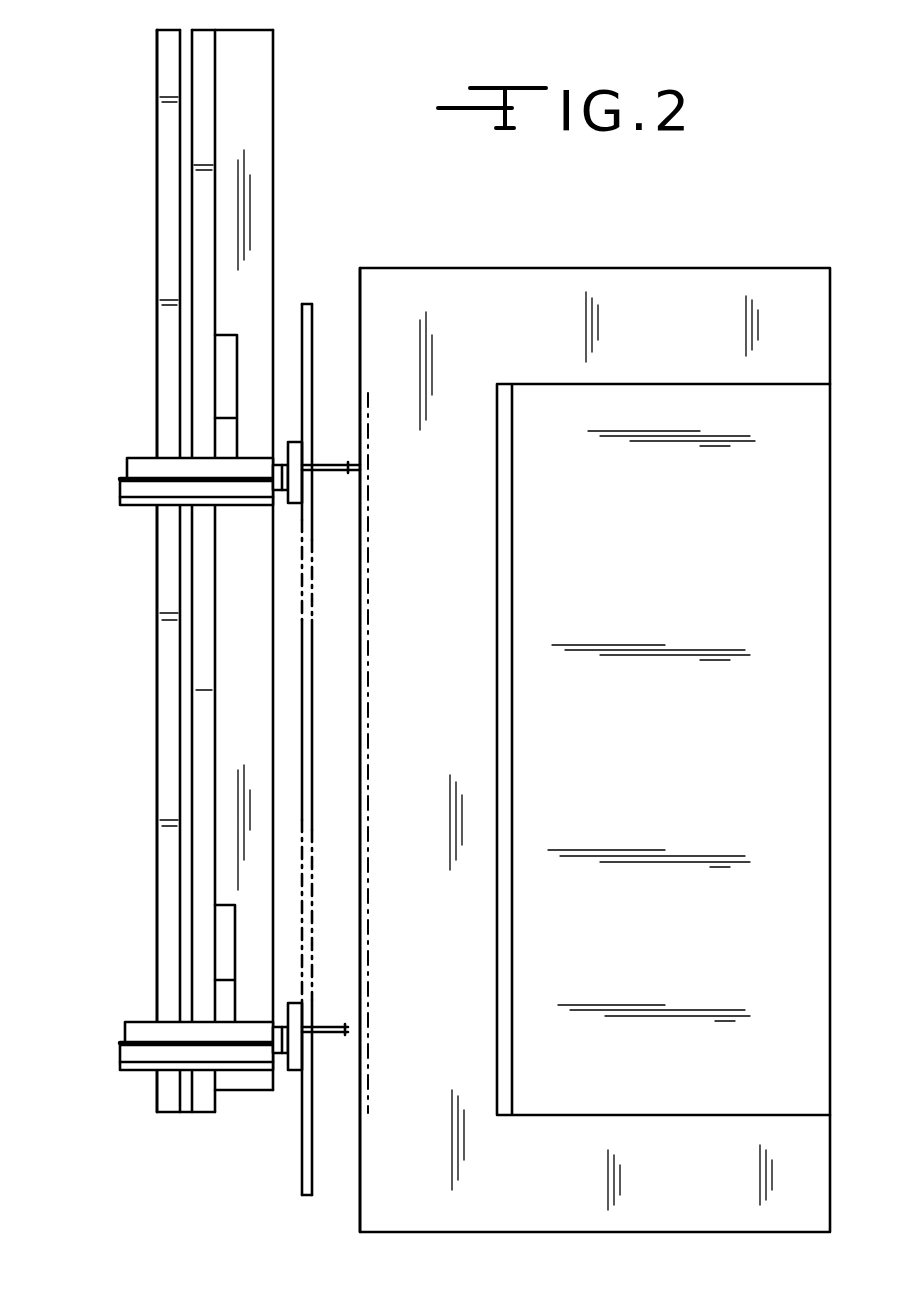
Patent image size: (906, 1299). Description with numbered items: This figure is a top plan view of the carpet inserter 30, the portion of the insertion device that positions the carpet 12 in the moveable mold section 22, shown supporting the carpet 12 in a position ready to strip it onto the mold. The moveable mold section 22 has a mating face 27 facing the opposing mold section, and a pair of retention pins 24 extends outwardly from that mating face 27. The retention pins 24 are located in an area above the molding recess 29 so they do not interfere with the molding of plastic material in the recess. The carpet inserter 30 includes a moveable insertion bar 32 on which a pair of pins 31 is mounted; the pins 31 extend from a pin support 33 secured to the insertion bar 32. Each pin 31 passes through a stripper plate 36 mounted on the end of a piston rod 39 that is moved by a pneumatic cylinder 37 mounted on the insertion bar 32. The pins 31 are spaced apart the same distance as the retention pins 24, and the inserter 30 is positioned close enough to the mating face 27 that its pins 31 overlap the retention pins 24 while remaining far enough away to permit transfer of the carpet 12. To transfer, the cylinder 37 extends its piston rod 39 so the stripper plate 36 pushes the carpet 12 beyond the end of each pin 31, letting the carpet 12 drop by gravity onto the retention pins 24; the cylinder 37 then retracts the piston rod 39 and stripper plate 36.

The carpet 12 is at (300, 1162).
The moveable mold section 22 is at (685, 288).
The retention pins 24 is at (348, 478).
The mating face 27 is at (360, 298).
The molding recess 29 is at (372, 752).
The carpet inserter 30 is at (136, 90).
The pins 31 is at (326, 462).
The moveable insertion bar 32 is at (165, 210).
The pin support 33 is at (140, 462).
The stripper plate 36 is at (299, 504).
The pneumatic cylinder 37 is at (129, 495).
The piston rod 39 is at (281, 492).